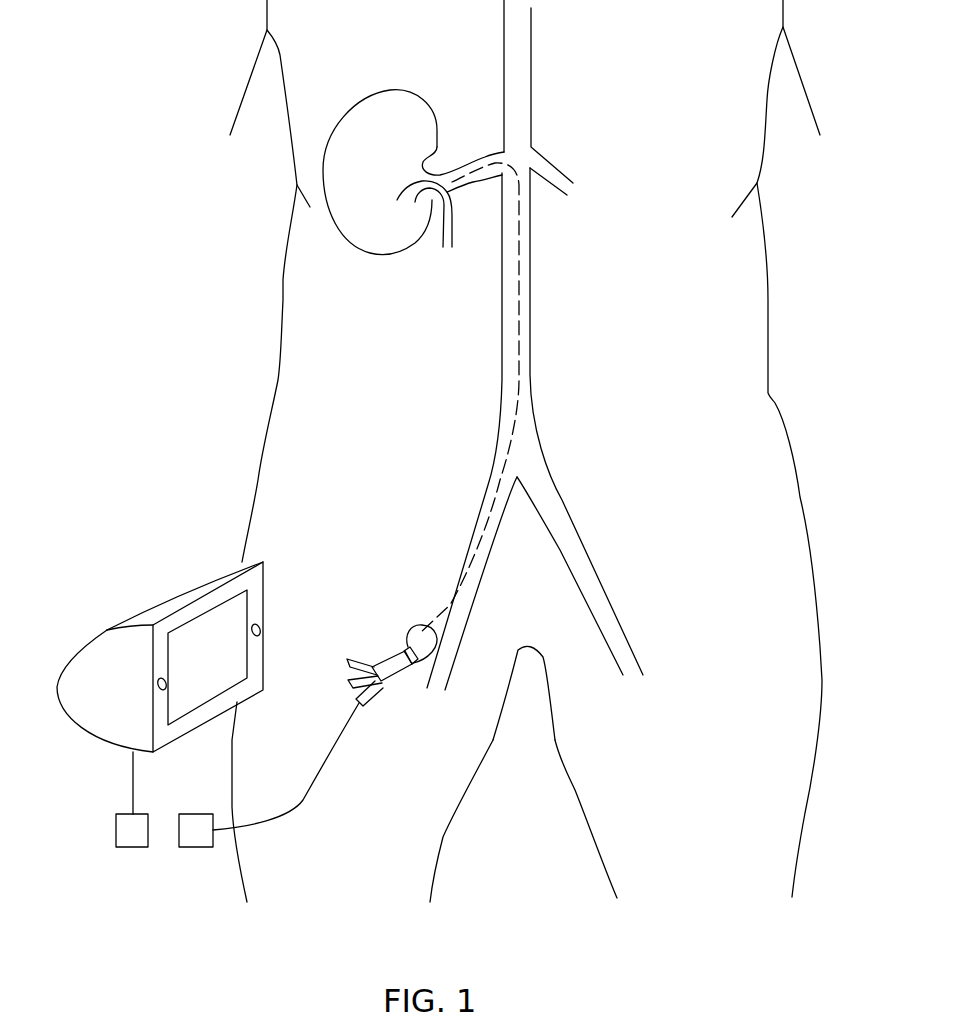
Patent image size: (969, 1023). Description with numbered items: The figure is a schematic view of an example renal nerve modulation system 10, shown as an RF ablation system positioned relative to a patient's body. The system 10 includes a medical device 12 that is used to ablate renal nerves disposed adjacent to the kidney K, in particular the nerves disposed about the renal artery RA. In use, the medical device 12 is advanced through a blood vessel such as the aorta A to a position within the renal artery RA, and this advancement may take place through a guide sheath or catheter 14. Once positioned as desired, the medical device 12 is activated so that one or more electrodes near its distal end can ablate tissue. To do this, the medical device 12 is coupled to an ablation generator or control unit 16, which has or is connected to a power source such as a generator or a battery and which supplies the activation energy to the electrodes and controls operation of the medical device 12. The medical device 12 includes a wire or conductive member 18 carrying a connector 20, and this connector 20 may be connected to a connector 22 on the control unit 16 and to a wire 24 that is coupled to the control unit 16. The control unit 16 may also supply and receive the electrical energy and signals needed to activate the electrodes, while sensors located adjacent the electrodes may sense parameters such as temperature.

The renal nerve modulation system 10 is at (333, 592).
The medical device 12 is at (383, 672).
The guide sheath or catheter 14 is at (404, 642).
The control unit 16 is at (172, 595).
The conductive member 18 is at (303, 798).
The connector 20 is at (195, 847).
The connector 22 is at (130, 847).
The wire 24 is at (133, 782).
The kidney K is at (340, 232).
The renal artery RA is at (480, 156).
The aorta A is at (528, 334).